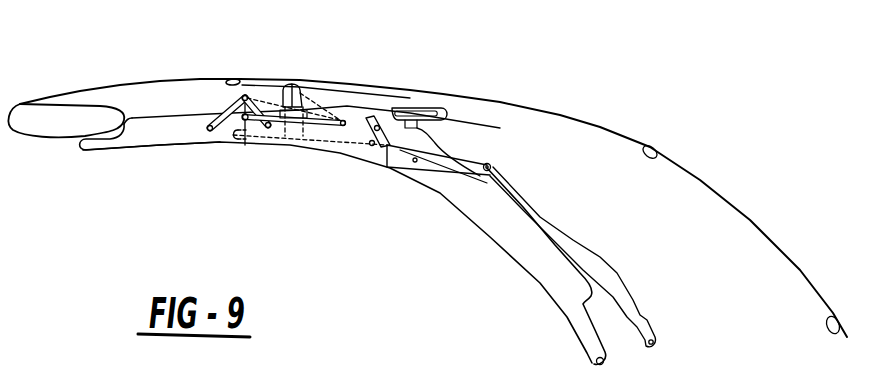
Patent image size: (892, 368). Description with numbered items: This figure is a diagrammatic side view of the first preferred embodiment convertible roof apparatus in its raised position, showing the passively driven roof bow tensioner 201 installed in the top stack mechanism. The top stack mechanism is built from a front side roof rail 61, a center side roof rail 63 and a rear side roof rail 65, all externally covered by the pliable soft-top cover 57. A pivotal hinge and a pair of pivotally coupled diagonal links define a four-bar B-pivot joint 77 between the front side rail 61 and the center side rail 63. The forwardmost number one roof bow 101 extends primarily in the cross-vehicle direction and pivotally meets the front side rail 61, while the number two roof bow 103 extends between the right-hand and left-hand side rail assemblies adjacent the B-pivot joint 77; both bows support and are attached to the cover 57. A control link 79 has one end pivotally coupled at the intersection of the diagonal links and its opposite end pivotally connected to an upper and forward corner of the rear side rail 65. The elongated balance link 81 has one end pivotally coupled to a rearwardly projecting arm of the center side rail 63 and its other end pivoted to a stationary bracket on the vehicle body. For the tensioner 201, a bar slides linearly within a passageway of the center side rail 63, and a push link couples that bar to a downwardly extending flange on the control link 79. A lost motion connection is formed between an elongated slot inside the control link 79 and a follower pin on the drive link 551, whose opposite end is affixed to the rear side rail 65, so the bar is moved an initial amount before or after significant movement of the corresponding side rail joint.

The roof bow tensioner 201 is at (316, 73).
The number one roof bow 101 is at (33, 126).
The number two roof bow 103 is at (229, 79).
The front side roof rail 61 is at (96, 144).
The B-pivot joint 77 is at (242, 155).
The center side roof rail 63 is at (315, 152).
The soft-top cover 57 is at (290, 82).
The control link 79 is at (344, 107).
The drive link 551 is at (430, 143).
The rear side roof rail 65 is at (566, 284).
The balance link 81 is at (603, 258).